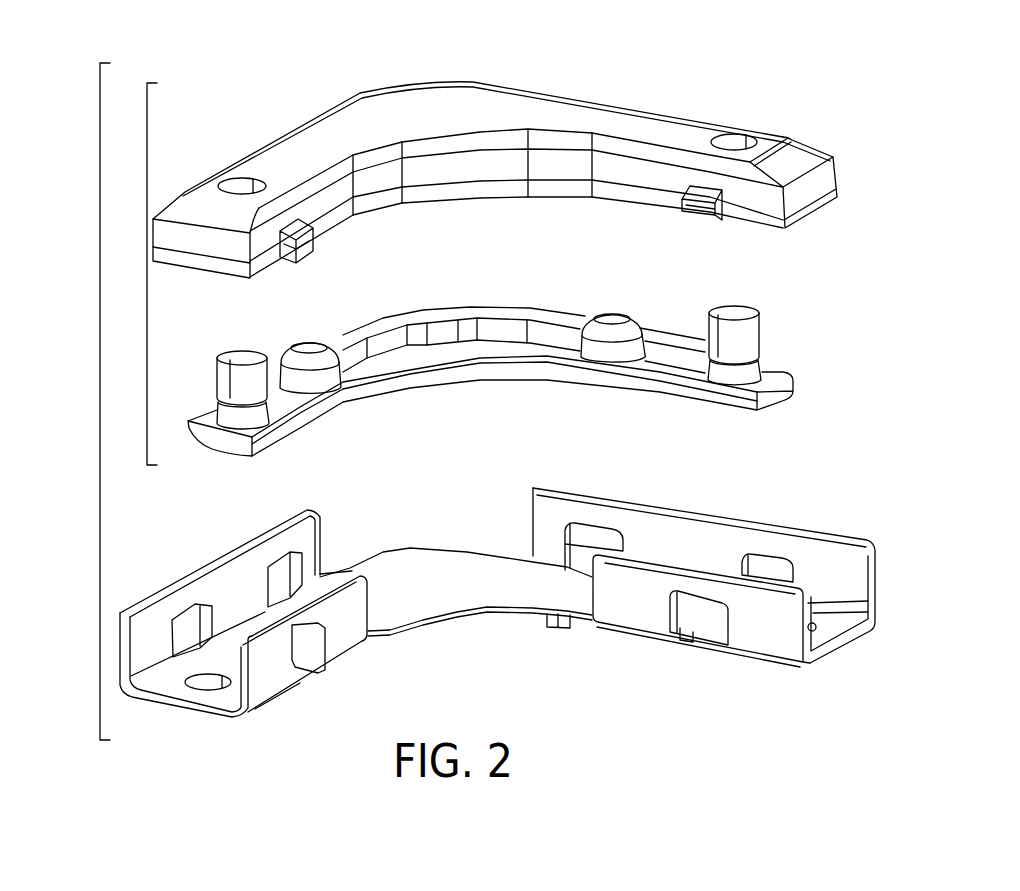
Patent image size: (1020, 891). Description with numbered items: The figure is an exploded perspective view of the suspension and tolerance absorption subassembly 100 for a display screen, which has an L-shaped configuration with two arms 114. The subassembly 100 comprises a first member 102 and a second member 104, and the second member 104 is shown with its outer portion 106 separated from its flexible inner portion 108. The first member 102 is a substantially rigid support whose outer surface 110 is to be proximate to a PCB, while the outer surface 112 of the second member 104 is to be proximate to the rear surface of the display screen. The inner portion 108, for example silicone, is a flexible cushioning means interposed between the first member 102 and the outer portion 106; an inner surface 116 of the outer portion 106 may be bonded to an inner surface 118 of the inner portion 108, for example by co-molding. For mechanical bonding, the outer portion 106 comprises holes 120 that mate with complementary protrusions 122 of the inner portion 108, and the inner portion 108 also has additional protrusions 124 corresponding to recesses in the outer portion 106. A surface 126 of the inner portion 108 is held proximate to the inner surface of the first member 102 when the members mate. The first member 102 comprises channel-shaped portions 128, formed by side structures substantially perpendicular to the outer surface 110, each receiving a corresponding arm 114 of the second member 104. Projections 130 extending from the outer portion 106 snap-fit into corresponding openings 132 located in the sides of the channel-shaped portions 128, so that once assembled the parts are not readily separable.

The suspension and tolerance absorption subassembly 100 is at (100, 413).
The first member 102 is at (512, 586).
The second member 104 is at (147, 284).
The outer portion 106 is at (529, 164).
The inner portion 108 is at (510, 356).
The outer surface 110 is at (452, 624).
The outer surface 112 is at (452, 93).
The arm 114 is at (308, 153).
The inner surface 116 is at (510, 197).
The inner surface 118 is at (442, 315).
The hole 120 is at (240, 186).
The protrusion 122 is at (242, 355).
The additional protrusion 124 is at (310, 345).
The surface 126 is at (460, 382).
The channel-shaped portion 128 is at (243, 648).
The projection 130 is at (310, 247).
The opening 132 is at (183, 615).